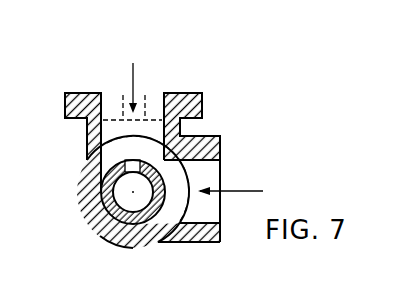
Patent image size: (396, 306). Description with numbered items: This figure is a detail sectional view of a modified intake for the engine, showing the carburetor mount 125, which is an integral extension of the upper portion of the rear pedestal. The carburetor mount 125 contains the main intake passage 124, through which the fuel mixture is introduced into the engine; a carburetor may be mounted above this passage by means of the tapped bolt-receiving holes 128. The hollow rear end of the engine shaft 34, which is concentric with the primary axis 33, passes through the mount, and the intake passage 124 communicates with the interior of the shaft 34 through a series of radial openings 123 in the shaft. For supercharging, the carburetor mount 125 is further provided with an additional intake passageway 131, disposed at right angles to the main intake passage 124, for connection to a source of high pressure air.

The tapped bolt-receiving holes 128 is at (118, 102).
The intake passage 124 is at (153, 102).
The radial openings 123 is at (127, 160).
The additional intake passageway 131 is at (205, 172).
The carburetor mount 125 is at (82, 205).
The primary axis 33 is at (115, 245).
The engine shaft 34 is at (132, 205).